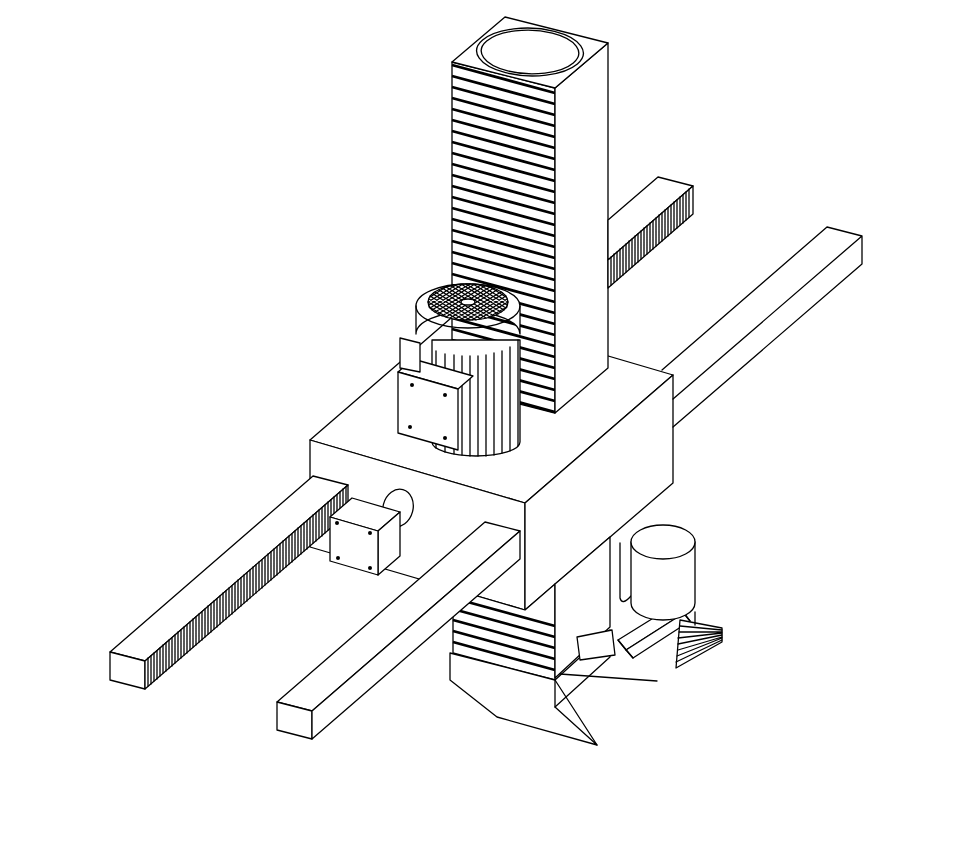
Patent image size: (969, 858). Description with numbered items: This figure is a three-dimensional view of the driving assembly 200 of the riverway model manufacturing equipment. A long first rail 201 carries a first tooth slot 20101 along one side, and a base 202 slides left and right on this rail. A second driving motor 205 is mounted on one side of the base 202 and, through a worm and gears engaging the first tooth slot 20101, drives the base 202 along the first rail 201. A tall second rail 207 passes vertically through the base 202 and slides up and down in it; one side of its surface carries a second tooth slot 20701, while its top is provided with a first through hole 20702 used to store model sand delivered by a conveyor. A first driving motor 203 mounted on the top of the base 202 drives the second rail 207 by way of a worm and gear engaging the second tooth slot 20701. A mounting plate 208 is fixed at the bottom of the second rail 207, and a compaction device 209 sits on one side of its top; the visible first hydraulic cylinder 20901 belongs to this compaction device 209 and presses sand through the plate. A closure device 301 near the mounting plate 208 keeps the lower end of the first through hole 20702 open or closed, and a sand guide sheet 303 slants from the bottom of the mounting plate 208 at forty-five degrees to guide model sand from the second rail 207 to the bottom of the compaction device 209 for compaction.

The driving assembly 200 is at (733, 128).
The first rail 201 is at (233, 567).
The first tooth slot 20101 is at (218, 620).
The base 202 is at (380, 428).
The first driving motor 203 is at (438, 327).
The second driving motor 205 is at (352, 540).
The second rail 207 is at (588, 115).
The second tooth slot 20701 is at (497, 175).
The first through hole 20702 is at (528, 50).
The mounting plate 208 is at (697, 632).
The compaction device 209 is at (667, 582).
The first hydraulic cylinder 20901 is at (673, 536).
The closure device 301 is at (657, 645).
The sand guide sheet 303 is at (552, 727).